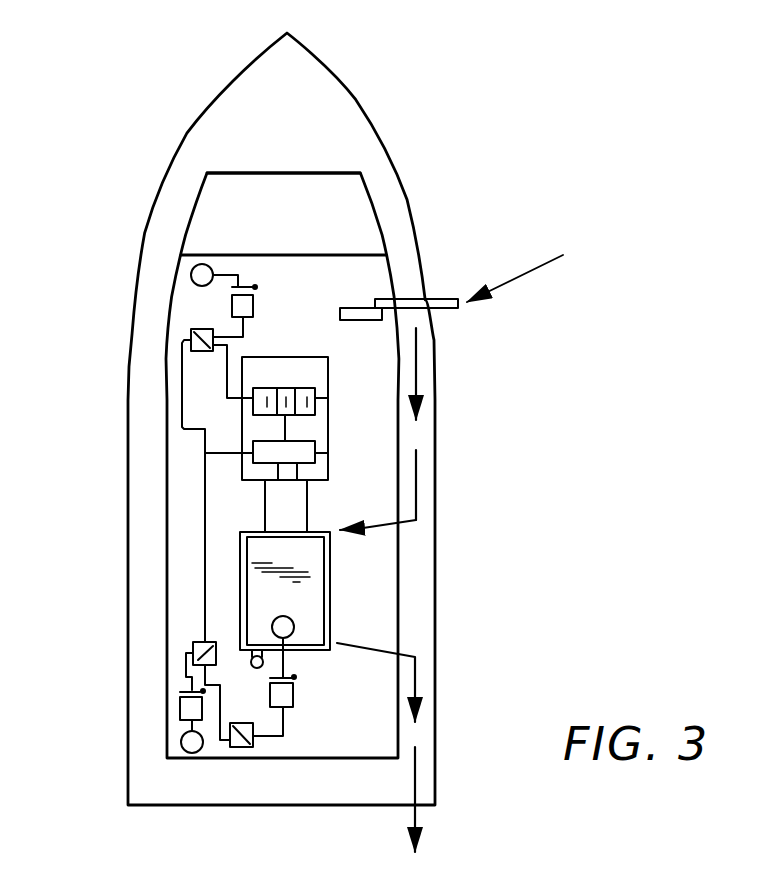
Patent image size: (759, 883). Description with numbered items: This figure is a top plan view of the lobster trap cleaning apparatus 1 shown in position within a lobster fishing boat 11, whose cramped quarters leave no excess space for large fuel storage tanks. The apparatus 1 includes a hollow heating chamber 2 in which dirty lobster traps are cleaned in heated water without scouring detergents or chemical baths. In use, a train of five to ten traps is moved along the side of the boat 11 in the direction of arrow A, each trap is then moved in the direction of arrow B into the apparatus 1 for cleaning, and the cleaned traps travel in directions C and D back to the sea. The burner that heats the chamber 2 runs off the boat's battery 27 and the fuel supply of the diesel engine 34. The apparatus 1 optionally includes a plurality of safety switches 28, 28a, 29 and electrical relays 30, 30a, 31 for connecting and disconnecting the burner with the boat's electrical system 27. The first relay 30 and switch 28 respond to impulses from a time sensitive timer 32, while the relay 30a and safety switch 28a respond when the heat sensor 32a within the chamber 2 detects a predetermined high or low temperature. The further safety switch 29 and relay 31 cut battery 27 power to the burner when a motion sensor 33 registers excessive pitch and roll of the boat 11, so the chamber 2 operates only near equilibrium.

The lobster fishing boat 11 is at (115, 432).
The lobster trap cleaning apparatus 1 is at (233, 573).
The heating chamber 2 is at (298, 597).
The battery 27 is at (328, 398).
The diesel engine 34 is at (328, 453).
The safety switch 28 is at (191, 335).
The safety switch 28a is at (240, 747).
The safety switch 29 is at (193, 645).
The electrical relay 30 is at (253, 306).
The electrical relay 30a is at (293, 697).
The electrical relay 31 is at (180, 710).
The timer 32 is at (190, 275).
The heat sensor 32a is at (294, 627).
The motion sensor 33 is at (192, 753).
The arrow A is at (416, 485).
The arrow B is at (383, 531).
The direction C is at (357, 640).
The direction D is at (418, 780).